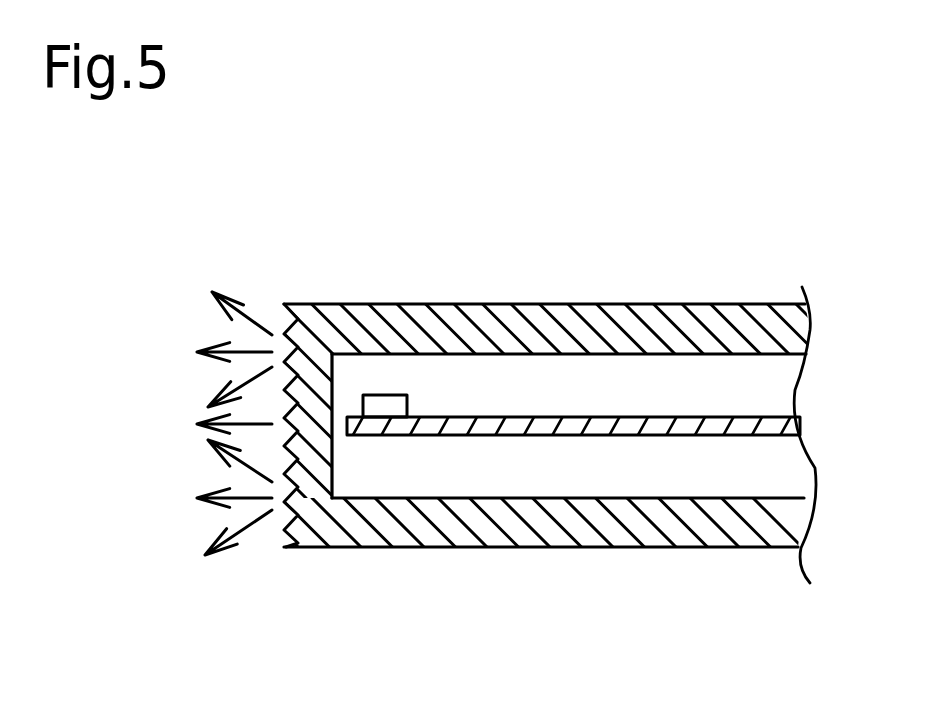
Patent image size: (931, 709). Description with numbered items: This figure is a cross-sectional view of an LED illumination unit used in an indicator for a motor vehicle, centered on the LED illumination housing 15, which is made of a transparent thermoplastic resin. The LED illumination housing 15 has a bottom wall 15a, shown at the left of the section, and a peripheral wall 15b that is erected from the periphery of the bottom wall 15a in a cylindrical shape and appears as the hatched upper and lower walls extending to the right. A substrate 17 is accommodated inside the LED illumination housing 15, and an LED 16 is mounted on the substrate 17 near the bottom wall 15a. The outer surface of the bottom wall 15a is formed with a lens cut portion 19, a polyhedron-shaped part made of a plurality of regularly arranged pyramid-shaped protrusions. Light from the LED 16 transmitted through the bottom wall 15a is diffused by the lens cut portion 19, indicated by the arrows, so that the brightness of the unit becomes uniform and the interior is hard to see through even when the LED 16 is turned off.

The LED illumination housing 15 is at (493, 386).
The bottom wall 15a is at (313, 462).
The peripheral wall 15b is at (660, 535).
The LED 16 is at (383, 395).
The substrate 17 is at (587, 425).
The lens cut portion 19 is at (262, 381).